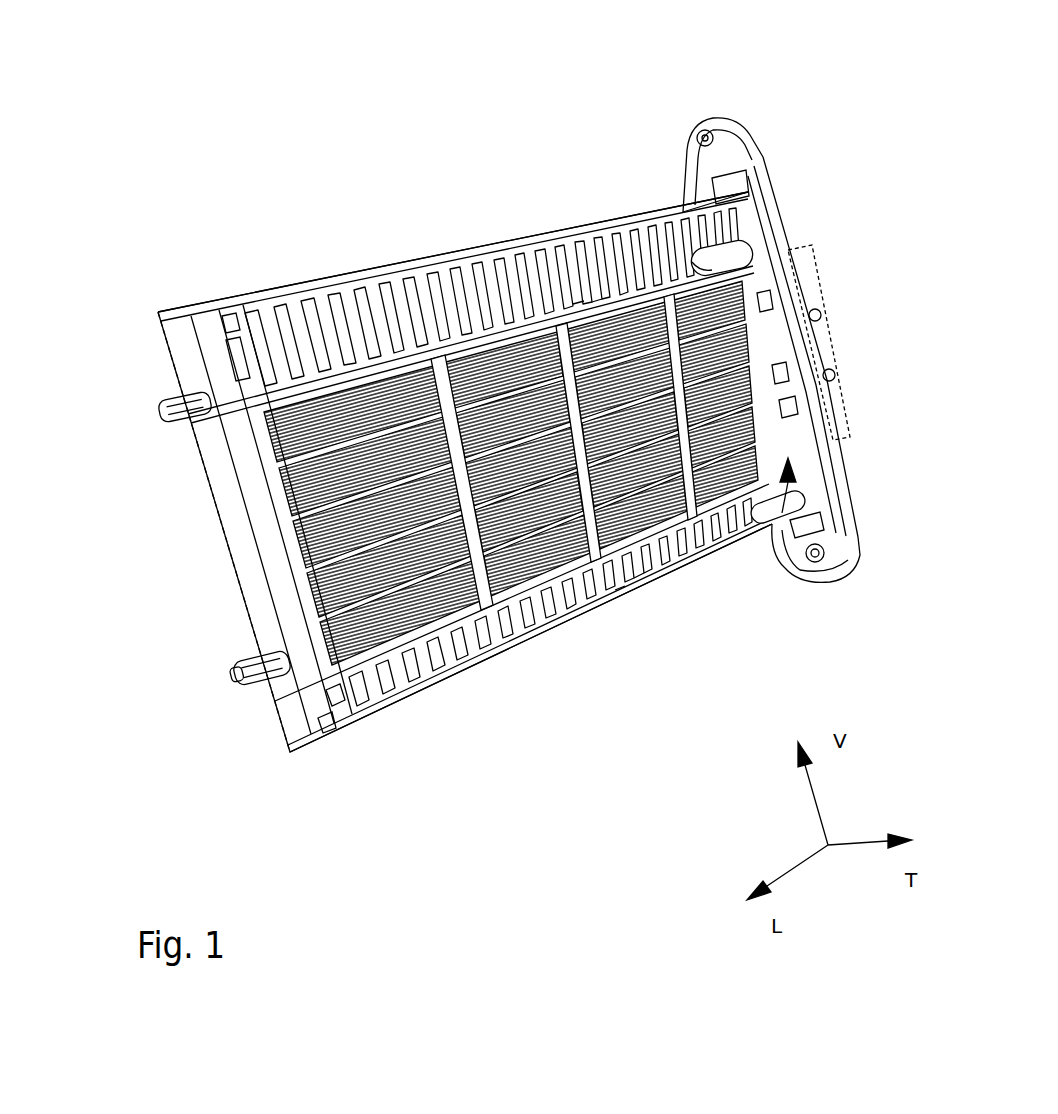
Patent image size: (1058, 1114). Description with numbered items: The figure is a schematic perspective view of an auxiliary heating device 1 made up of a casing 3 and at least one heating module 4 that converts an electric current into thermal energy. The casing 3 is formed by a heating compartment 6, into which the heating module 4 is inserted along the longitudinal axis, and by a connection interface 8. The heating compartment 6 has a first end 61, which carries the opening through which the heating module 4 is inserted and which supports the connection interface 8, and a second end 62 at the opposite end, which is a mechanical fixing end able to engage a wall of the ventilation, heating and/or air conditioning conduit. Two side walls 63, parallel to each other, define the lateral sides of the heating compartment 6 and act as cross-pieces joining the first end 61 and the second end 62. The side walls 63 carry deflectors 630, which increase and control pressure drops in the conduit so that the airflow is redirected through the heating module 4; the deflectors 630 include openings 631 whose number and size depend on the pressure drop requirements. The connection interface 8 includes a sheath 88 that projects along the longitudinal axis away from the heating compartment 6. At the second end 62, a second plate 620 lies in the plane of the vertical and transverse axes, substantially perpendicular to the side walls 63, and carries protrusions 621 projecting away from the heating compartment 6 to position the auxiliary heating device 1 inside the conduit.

The auxiliary heating device 1 is at (858, 180).
The casing 3 is at (460, 178).
The heating module 4 is at (594, 562).
The heating compartment 6 is at (356, 262).
The connection interface 8 is at (755, 112).
The first end 61 is at (777, 545).
The second end 62 is at (234, 558).
The side walls 63 is at (433, 286).
The sheath 88 is at (832, 336).
The second plate 620 is at (220, 496).
The protrusions 621 is at (168, 410).
The deflectors 630 is at (590, 237).
The openings 631 is at (247, 298).